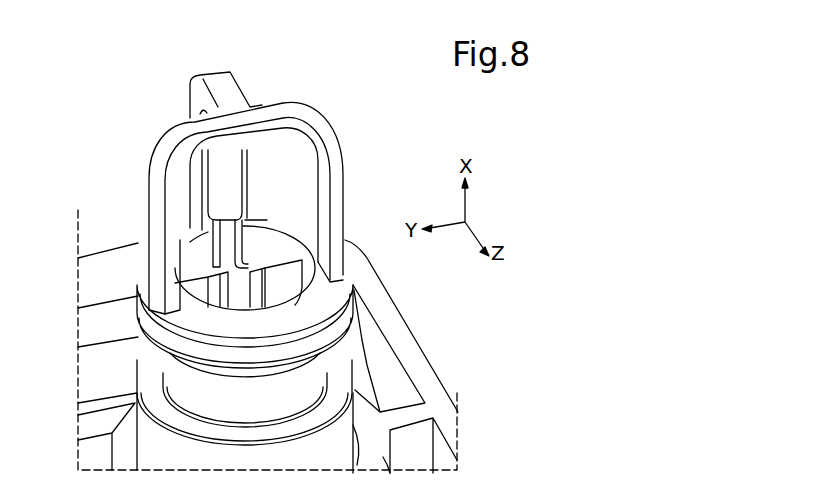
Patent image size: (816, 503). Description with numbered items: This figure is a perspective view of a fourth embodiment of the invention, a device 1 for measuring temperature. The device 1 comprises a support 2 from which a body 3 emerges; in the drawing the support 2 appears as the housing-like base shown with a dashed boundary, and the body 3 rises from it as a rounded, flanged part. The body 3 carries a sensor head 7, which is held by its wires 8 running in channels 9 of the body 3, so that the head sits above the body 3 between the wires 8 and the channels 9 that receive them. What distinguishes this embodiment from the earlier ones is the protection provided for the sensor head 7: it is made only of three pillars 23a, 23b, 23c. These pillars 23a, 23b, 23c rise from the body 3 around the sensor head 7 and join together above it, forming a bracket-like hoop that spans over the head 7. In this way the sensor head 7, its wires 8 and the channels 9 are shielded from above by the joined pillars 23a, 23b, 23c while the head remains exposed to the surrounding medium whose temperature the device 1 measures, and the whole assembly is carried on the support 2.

The device for measuring temperature 1 is at (163, 101).
The support 2 is at (387, 333).
The body 3 is at (143, 327).
The sensor head 7 is at (240, 168).
The wires 8 is at (208, 242).
The channels 9 is at (185, 270).
The pillar 23a is at (149, 177).
The pillar 23b is at (337, 157).
The pillar 23c is at (217, 88).